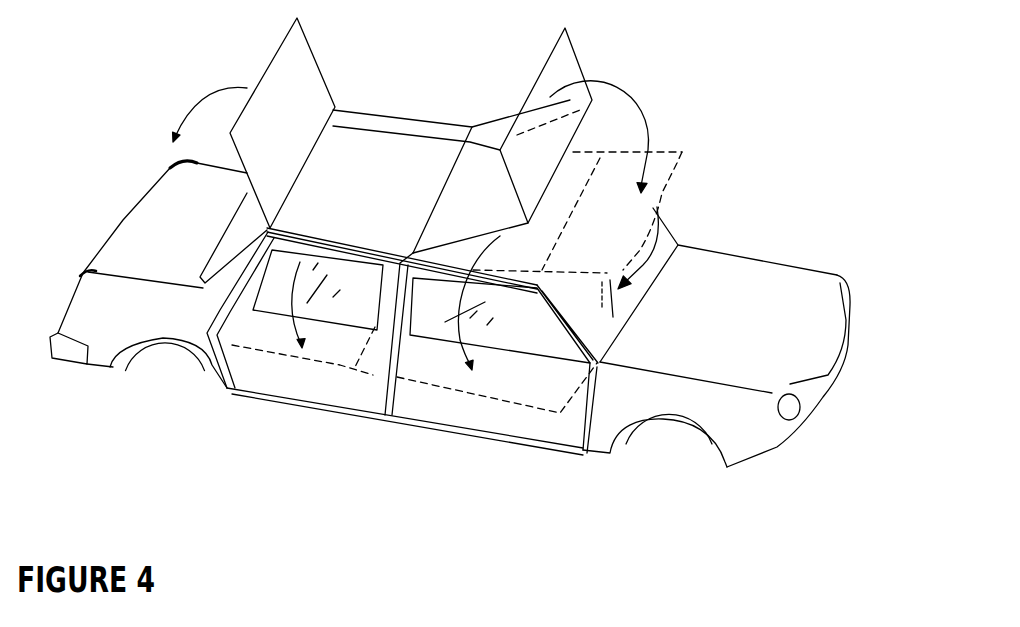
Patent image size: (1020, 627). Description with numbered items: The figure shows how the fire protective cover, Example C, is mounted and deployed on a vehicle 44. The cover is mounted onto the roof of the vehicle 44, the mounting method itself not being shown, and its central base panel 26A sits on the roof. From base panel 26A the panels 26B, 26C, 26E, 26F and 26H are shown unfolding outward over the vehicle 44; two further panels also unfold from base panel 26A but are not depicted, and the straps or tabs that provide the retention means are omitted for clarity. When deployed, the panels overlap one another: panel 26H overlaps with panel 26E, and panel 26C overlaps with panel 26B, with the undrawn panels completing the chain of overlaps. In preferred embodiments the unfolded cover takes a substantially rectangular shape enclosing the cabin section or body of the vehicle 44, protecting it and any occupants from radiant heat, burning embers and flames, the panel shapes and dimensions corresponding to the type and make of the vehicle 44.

The base panel 26A is at (481, 201).
The panel 26B is at (342, 162).
The panel 26C is at (283, 333).
The panel 26E is at (497, 373).
The panel 26F is at (544, 130).
The panel 26H is at (620, 183).
The vehicle 44 is at (725, 337).